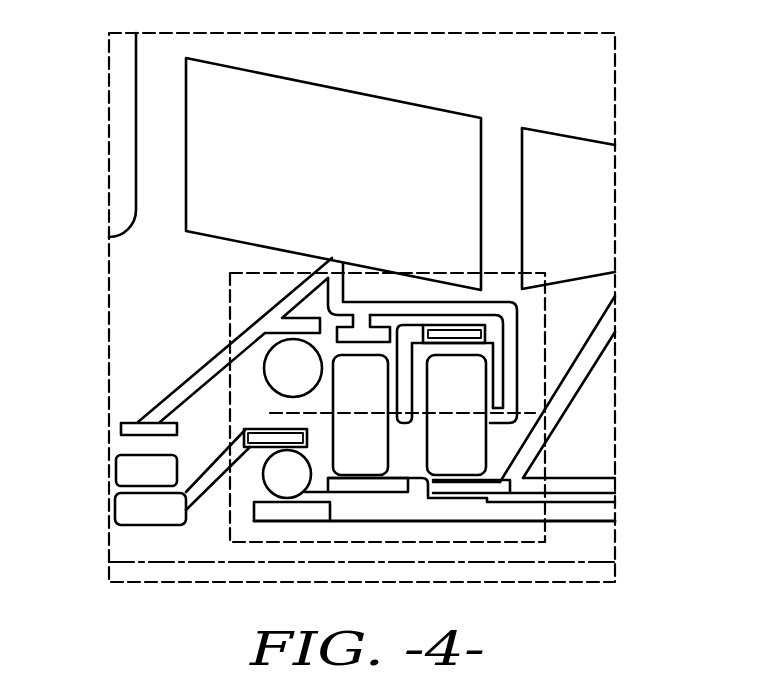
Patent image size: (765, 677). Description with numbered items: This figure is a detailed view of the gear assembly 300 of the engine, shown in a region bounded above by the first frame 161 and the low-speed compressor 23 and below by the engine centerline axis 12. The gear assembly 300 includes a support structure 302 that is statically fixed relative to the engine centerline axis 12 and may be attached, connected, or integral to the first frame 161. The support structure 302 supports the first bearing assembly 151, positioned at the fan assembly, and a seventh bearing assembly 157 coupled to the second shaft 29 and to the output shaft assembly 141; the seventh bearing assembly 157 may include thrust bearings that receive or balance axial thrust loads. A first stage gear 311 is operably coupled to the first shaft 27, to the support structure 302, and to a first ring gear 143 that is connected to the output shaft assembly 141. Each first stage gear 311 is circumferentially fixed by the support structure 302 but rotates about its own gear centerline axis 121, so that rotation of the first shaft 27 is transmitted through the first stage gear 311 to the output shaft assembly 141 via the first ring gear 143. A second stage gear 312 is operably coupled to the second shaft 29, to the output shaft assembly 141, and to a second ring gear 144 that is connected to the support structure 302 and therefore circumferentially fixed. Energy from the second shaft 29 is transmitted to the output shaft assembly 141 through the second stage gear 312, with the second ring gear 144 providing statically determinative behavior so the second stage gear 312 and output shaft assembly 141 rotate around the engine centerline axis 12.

The engine centerline axis 12 is at (187, 562).
The low-speed compressor 23 is at (584, 131).
The first shaft 27 is at (588, 481).
The second shaft 29 is at (588, 513).
The gear centerline axis 121 is at (432, 410).
The output shaft assembly 141 is at (143, 525).
The first ring gear 143 is at (455, 323).
The second ring gear 144 is at (362, 323).
The first bearing assembly 151 is at (131, 413).
The seventh bearing assembly 157 is at (259, 381).
The first frame 161 is at (373, 92).
The gear assembly 300 is at (488, 543).
The support structure 302 is at (521, 330).
The first stage gear 311 is at (480, 453).
The second stage gear 312 is at (383, 453).